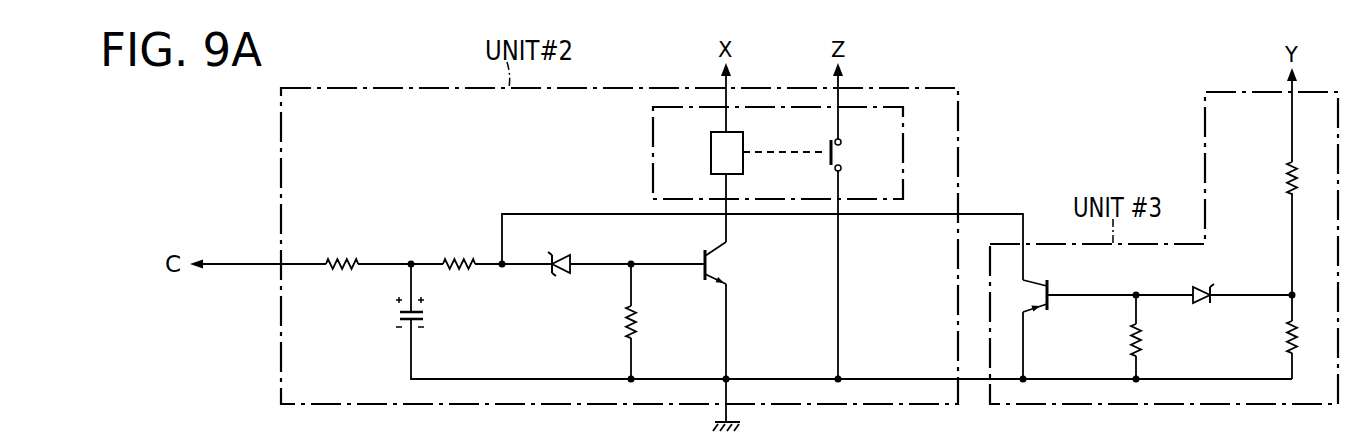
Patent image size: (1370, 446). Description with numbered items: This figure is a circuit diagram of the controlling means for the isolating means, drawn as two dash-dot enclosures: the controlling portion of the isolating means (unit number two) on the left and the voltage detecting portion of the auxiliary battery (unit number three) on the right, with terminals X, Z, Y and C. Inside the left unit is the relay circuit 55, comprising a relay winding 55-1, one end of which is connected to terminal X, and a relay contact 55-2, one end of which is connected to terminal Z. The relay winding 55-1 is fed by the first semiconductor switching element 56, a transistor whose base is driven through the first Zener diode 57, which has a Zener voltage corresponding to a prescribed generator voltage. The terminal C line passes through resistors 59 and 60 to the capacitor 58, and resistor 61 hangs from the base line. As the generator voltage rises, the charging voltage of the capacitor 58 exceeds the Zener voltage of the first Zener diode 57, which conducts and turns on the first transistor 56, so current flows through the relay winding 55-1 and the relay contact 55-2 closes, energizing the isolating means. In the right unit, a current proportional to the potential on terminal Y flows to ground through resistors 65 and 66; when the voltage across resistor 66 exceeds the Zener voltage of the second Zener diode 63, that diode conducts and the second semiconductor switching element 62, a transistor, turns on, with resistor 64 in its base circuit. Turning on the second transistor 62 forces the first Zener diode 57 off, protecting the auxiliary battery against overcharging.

The relay circuit 55 is at (651, 140).
The relay winding 55-1 is at (745, 140).
The relay contact 55-2 is at (815, 155).
The first semiconductor switching element 56 is at (712, 258).
The first Zener diode 57 is at (571, 262).
The capacitor 58 is at (428, 313).
The resistor 59 is at (347, 258).
The resistor 60 is at (458, 258).
The resistor 61 is at (625, 321).
The second semiconductor switching element 62 is at (1040, 307).
The second Zener diode 63 is at (1195, 290).
The resistor 64 is at (1143, 340).
The resistor 65 is at (1287, 178).
The resistor 66 is at (1287, 335).